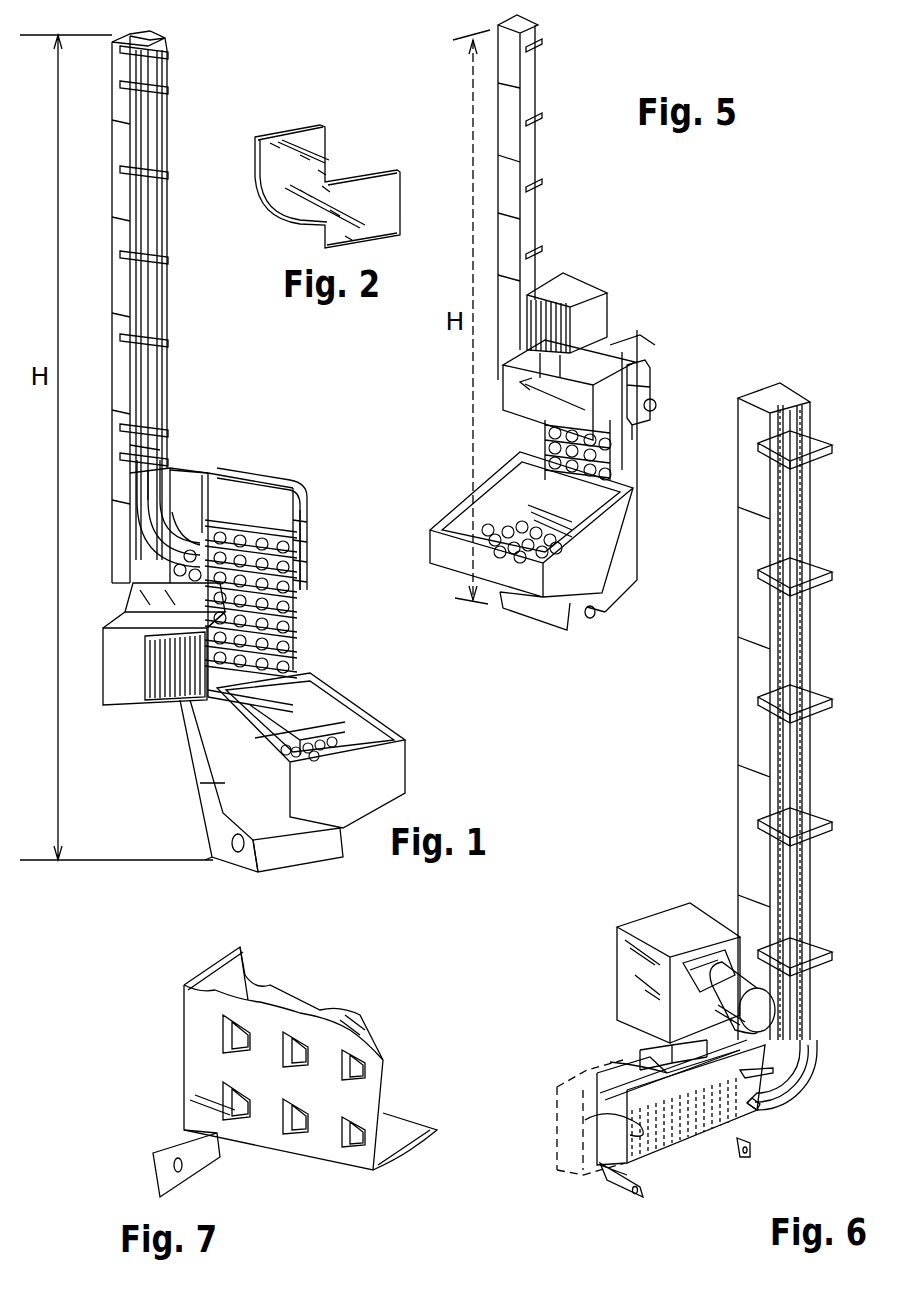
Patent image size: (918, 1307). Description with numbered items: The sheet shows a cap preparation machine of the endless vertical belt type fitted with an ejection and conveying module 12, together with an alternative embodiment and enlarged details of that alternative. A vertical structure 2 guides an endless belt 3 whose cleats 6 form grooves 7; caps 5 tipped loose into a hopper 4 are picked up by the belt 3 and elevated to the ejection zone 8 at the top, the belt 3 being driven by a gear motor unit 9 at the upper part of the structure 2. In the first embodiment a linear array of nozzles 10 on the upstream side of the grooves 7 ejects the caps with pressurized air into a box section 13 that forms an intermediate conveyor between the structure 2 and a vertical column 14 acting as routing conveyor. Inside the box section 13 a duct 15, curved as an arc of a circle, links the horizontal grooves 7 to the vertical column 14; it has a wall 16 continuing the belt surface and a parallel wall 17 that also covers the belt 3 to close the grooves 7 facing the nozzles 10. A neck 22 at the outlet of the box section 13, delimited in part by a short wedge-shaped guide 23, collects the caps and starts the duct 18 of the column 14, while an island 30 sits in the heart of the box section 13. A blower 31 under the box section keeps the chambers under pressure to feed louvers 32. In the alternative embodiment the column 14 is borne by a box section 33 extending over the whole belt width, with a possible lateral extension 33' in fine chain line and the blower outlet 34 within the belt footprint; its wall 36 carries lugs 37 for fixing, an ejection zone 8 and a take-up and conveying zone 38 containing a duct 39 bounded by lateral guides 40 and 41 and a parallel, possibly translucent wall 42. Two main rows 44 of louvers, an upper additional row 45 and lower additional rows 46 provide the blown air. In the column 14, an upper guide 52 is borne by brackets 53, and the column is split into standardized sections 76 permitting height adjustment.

In FIG. 1, the vertical structure 2 is at (213, 807).
In FIG. 5, the vertical structure 2 is at (613, 567).
In FIG. 1, the endless belt 3 is at (293, 648).
In FIG. 5, the endless belt 3 is at (613, 463).
In FIG. 1, the hopper 4 is at (328, 685).
In FIG. 5, the hopper 4 is at (593, 500).
In FIG. 1, the caps 5 is at (300, 712).
In FIG. 5, the caps 5 is at (495, 533).
In FIG. 1, the cleats 6 is at (288, 590).
In FIG. 1, the grooves 7 is at (308, 618).
In FIG. 1, the ejection zone 8 is at (339, 524).
In FIG. 5, the ejection zone 8 is at (640, 434).
In FIG. 6, the ejection zone 8 is at (757, 1165).
In FIG. 1, the gear motor unit 9 is at (280, 478).
In FIG. 5, the gear motor unit 9 is at (630, 337).
In FIG. 1, the nozzles 10 is at (300, 558).
In FIG. 1, the ejection and conveying module 12 is at (187, 424).
In FIG. 5, the ejection and conveying module 12 is at (568, 256).
In FIG. 6, the ejection and conveying module 12 is at (733, 897).
In FIG. 1, the box section 13 is at (108, 572).
In FIG. 1, the column 14 is at (118, 405).
In FIG. 5, the column 14 is at (530, 223).
In FIG. 6, the column 14 is at (726, 835).
In FIG. 1, the duct 15 is at (150, 498).
In FIG. 1, the wall 16 is at (187, 490).
In FIG. 2, the wall 17 is at (290, 153).
In FIG. 1, the duct 18 is at (160, 385).
In FIG. 6, the duct 18 is at (807, 918).
In FIG. 1, the neck 22 is at (128, 472).
In FIG. 1, the wedge-shaped guide 23 is at (185, 478).
In FIG. 1, the island 30 is at (180, 530).
In FIG. 1, the blower 31 is at (117, 670).
In FIG. 5, the blower 31 is at (580, 288).
In FIG. 6, the blower 31 is at (617, 962).
In FIG. 7, the louvers 32 is at (287, 1133).
In FIG. 5, the box section 33 is at (458, 416).
In FIG. 6, the box section 33 is at (652, 1098).
In FIG. 7, the box section 33 is at (230, 1038).
In FIG. 6, the lateral extension 33' is at (554, 1124).
In FIG. 1, the outlet 34 is at (157, 590).
In FIG. 5, the outlet 34 is at (500, 392).
In FIG. 6, the wall 36 is at (657, 1095).
In FIG. 7, the wall 36 is at (360, 1093).
In FIG. 6, the lugs 37 is at (623, 1190).
In FIG. 7, the lugs 37 is at (150, 1165).
In FIG. 6, the take-up and conveying zone 38 is at (880, 1020).
In FIG. 6, the duct 39 is at (807, 1077).
In FIG. 6, the lateral guide 40 is at (783, 1110).
In FIG. 6, the lateral guide 41 is at (795, 1023).
In FIG. 6, the wall 42 is at (803, 1053).
In FIG. 6, the main rows 44 is at (625, 1115).
In FIG. 6, the additional row 45 is at (620, 1065).
In FIG. 6, the additional rows 46 is at (757, 1137).
In FIG. 1, the upper guide 52 is at (157, 285).
In FIG. 6, the upper guide 52 is at (807, 1003).
In FIG. 1, the brackets 53 is at (168, 88).
In FIG. 5, the brackets 53 is at (540, 120).
In FIG. 6, the brackets 53 is at (840, 968).
In FIG. 1, the sections 76 is at (120, 282).
In FIG. 5, the sections 76 is at (530, 70).
In FIG. 6, the sections 76 is at (747, 457).